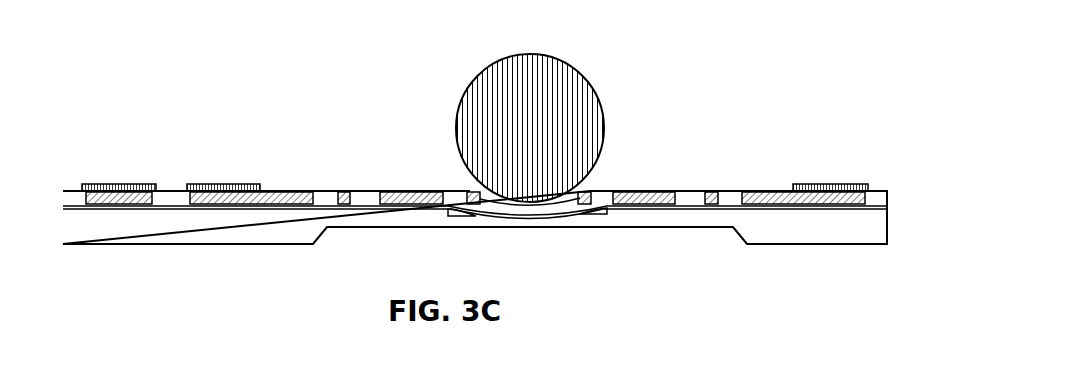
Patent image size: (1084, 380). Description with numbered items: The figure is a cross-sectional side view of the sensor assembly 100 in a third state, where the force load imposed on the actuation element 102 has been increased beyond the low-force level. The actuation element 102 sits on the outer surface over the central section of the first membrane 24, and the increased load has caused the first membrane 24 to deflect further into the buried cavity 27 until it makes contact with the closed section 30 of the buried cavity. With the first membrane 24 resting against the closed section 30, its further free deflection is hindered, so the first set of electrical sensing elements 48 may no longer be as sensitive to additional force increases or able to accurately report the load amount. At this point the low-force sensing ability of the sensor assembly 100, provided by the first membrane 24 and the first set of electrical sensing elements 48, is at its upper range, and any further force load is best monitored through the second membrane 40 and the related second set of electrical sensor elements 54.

The sensor assembly 100 is at (786, 116).
The actuation element 102 is at (566, 94).
The first membrane 24 is at (572, 194).
The first set of electrical sensing elements 48 is at (462, 191).
The second set of electrical sensor elements 54 is at (334, 191).
The closed section of the buried cavity 30 is at (456, 214).
The buried cavity 27 is at (586, 216).
The second membrane 40 is at (543, 223).